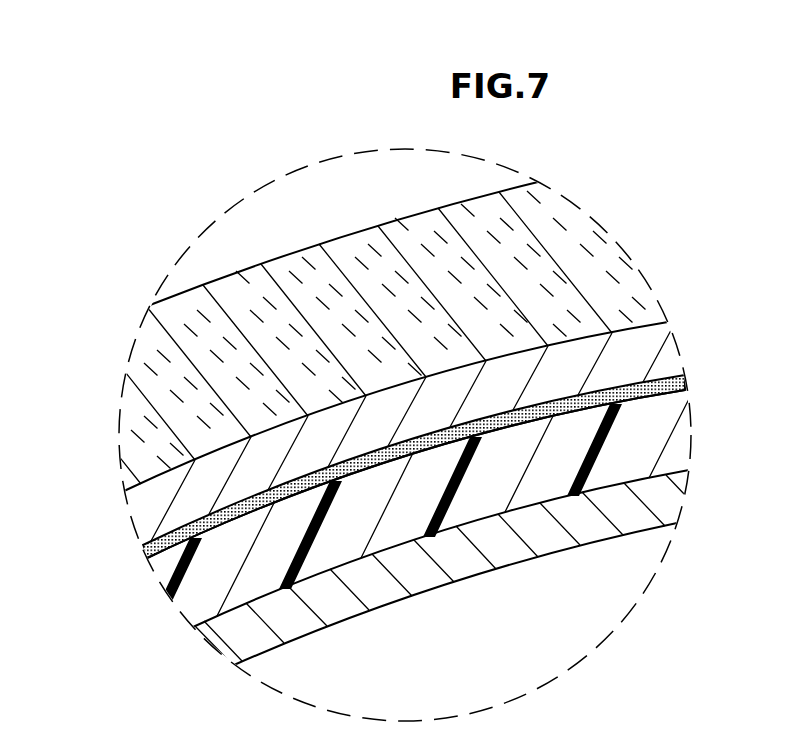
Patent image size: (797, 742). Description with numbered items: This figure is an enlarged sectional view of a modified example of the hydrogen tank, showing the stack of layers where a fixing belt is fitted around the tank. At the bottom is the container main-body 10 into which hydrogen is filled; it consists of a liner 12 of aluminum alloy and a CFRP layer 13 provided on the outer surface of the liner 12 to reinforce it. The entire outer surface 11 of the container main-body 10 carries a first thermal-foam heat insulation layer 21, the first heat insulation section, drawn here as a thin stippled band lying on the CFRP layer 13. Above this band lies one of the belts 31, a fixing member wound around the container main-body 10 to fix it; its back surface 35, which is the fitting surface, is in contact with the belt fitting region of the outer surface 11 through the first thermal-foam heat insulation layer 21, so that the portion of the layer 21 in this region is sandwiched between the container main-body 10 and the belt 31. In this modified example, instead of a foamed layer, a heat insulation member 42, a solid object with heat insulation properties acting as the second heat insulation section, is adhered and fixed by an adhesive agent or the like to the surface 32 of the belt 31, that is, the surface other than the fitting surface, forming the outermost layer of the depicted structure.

The container main-body 10 is at (68, 583).
The outer surface 11 is at (192, 522).
The liner 12 is at (240, 630).
The CFRP layer 13 is at (210, 583).
The first thermal-foam heat insulation layer 21 is at (683, 383).
The belt 31 is at (647, 348).
The surface 32 is at (600, 333).
The back surface 35 is at (523, 410).
The heat insulation member 42 is at (623, 302).